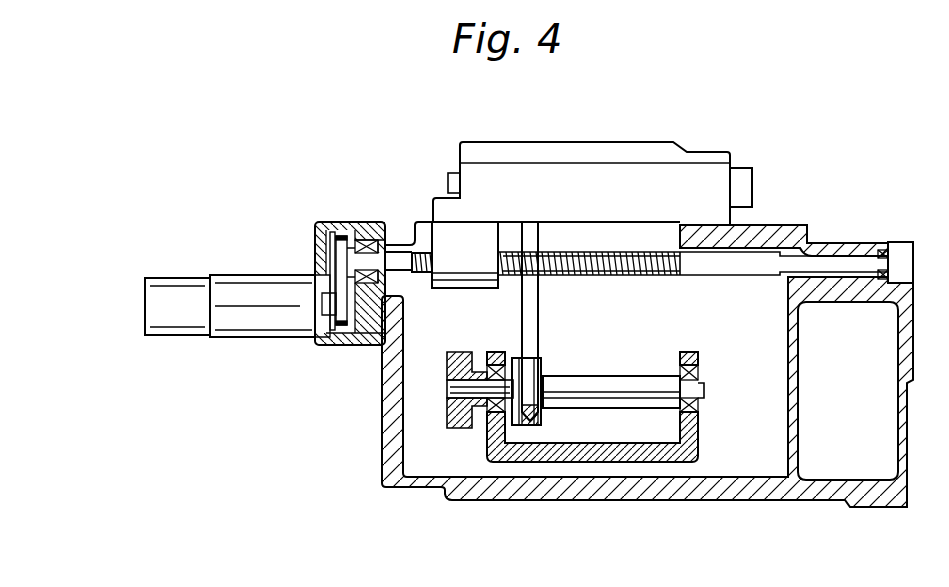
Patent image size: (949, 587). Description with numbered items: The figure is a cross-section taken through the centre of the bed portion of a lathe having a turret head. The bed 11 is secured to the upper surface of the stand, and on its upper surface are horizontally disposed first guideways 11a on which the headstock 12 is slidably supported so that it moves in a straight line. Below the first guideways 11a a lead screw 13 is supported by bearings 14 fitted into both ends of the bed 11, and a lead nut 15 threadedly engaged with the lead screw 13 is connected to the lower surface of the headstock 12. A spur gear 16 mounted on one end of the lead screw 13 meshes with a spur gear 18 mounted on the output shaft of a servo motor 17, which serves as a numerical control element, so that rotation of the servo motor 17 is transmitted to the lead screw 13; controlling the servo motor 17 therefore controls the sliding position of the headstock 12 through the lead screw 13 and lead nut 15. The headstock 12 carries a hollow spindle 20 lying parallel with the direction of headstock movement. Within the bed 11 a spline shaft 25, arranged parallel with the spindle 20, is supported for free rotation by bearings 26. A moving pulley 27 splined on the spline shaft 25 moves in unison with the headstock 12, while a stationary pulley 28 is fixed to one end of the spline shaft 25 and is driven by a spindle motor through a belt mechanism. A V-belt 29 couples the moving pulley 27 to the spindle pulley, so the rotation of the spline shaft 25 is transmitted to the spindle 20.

The bed 11 is at (908, 372).
The first guideways 11a is at (782, 225).
The headstock 12 is at (607, 172).
The lead screw 13 is at (666, 276).
The bearings 14 is at (376, 226).
The lead nut 15 is at (462, 288).
The spur gear 16 is at (333, 233).
The servo motor 17 is at (245, 337).
The spur gear 18 is at (330, 332).
The hollow spindle 20 is at (741, 168).
The spline shaft 25 is at (624, 376).
The bearings 26 is at (490, 430).
The moving pulley 27 is at (545, 392).
The stationary pulley 28 is at (447, 408).
The V-belt 29 is at (540, 311).